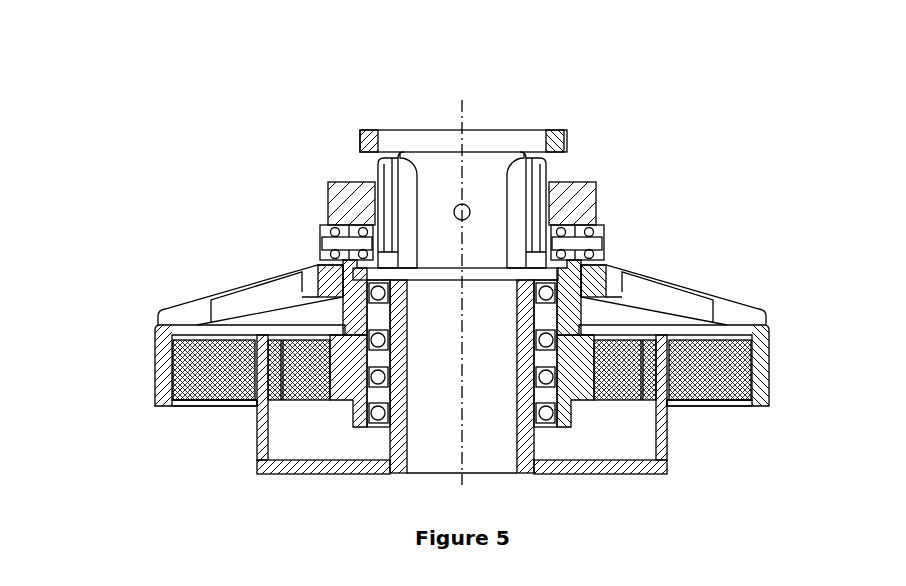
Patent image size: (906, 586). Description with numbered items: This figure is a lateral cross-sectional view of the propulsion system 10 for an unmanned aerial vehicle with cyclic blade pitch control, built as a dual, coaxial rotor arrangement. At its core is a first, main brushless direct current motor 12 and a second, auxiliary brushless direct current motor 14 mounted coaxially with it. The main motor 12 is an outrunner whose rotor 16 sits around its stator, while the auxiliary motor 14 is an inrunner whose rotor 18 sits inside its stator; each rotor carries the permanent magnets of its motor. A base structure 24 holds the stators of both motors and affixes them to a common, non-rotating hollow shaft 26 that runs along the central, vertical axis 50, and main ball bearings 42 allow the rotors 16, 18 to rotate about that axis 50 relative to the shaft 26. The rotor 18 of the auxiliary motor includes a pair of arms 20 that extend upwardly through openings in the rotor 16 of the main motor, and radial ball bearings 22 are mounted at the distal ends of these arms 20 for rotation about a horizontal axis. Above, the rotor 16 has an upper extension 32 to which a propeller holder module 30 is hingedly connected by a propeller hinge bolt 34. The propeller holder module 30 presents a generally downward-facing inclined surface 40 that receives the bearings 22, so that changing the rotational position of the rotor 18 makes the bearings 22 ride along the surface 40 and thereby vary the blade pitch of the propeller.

The propulsion system 10 is at (562, 54).
The first, main brushless direct current motor 12 is at (155, 350).
The second, auxiliary brushless direct current motor 14 is at (165, 398).
The rotor 16 is at (158, 328).
The rotor 18 is at (253, 408).
The arms 20 is at (343, 303).
The radial ball bearings 22 is at (320, 243).
The base structure 24 is at (173, 366).
The hollow shaft 26 is at (493, 450).
The propeller holder module 30 is at (372, 218).
The upper extension 32 is at (376, 142).
The propeller hinge bolt 34 is at (459, 205).
The inclined surface 40 is at (335, 200).
The main ball bearings 42 is at (255, 445).
The central, vertical axis 50 is at (464, 113).